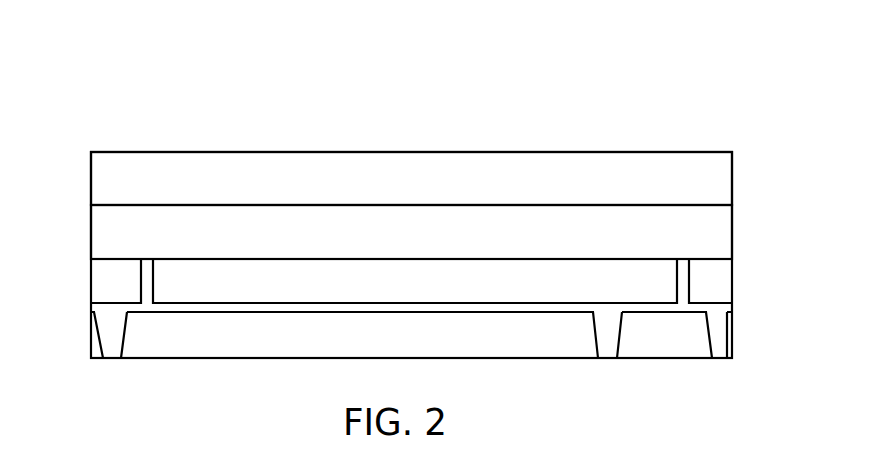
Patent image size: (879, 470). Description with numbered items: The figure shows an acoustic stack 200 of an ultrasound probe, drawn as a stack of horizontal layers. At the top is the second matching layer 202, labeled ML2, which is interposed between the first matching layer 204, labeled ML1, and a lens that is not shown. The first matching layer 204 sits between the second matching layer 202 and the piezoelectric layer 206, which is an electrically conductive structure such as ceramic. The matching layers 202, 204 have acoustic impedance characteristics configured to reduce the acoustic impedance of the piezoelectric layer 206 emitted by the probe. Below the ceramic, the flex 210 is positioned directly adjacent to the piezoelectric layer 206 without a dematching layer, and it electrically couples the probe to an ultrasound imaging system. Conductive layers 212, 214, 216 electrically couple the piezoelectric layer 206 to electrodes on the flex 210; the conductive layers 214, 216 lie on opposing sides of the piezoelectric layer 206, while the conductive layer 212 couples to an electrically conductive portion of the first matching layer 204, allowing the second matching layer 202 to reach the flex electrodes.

The acoustic stack 200 is at (567, 57).
The second matching layer 202 is at (741, 152).
The first matching layer 204 is at (741, 205).
The piezoelectric layer 206 is at (741, 259).
The flex 210 is at (746, 335).
The conductive layer 212 is at (91, 205).
The conductive layer 214 is at (91, 259).
The conductive layer 216 is at (91, 303).